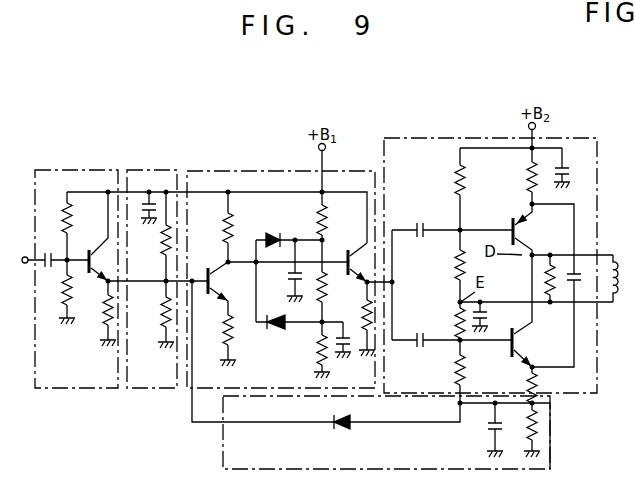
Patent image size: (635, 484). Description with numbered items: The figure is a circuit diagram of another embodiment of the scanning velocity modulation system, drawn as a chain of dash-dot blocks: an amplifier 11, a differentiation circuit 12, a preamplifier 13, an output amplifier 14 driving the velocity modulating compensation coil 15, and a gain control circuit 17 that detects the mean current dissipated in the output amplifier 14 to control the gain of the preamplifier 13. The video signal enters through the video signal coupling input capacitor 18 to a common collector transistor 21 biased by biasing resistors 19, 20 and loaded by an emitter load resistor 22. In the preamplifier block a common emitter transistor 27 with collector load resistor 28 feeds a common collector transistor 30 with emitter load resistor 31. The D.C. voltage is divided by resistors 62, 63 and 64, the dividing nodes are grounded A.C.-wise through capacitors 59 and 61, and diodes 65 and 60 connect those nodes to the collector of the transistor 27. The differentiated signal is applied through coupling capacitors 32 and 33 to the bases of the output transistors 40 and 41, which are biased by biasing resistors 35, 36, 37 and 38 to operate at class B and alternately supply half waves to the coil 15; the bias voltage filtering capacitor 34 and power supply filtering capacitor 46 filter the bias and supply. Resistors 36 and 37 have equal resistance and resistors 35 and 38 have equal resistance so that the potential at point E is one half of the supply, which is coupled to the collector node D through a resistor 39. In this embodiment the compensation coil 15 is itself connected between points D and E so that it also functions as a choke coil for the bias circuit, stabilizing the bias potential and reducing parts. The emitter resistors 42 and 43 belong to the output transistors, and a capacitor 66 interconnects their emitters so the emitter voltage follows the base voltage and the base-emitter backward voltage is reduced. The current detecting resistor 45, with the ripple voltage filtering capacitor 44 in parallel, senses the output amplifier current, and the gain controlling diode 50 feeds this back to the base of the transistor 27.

The amplifier 11 is at (77, 170).
The differentiation circuit 12 is at (148, 170).
The preamplifier 13 is at (247, 171).
The output amplifier 14 is at (447, 138).
The velocity modulating compensation coil 15 is at (612, 302).
The gain control circuit 17 is at (222, 433).
The video signal coupling input capacitor 18 is at (47, 252).
The biasing resistor 19 is at (62, 295).
The biasing resistor 20 is at (74, 216).
The common collector transistor 21 is at (96, 283).
The emitter load resistor 22 is at (104, 324).
The common emitter transistor 27 is at (215, 283).
The collector load resistor 28 is at (222, 228).
The common collector transistor 30 is at (348, 249).
The emitter load resistor 31 is at (362, 326).
The coupling capacitor 32 is at (421, 222).
The coupling capacitor 33 is at (415, 336).
The bias voltage filtering capacitor 34 is at (486, 316).
The biasing resistor 35 is at (454, 184).
The biasing resistor 36 is at (455, 264).
The biasing resistor 37 is at (455, 319).
The biasing resistor 38 is at (456, 378).
The biasing resistor 39 is at (543, 280).
The output transistor 40 is at (531, 235).
The output transistor 41 is at (532, 346).
The emitter resistor 42 is at (524, 184).
The emitter resistor 43 is at (526, 379).
The ripple voltage filtering capacitor 44 is at (488, 426).
The current detecting resistor 45 is at (543, 424).
The power supply filtering capacitor 46 is at (565, 169).
The gain controlling diode 50 is at (341, 431).
The capacitor 59 is at (287, 276).
The diode 60 is at (276, 329).
The capacitor 61 is at (350, 360).
The resistor 62 is at (315, 220).
The resistor 63 is at (330, 293).
The resistor 64 is at (316, 355).
The diode 65 is at (271, 233).
The capacitor 66 is at (580, 270).